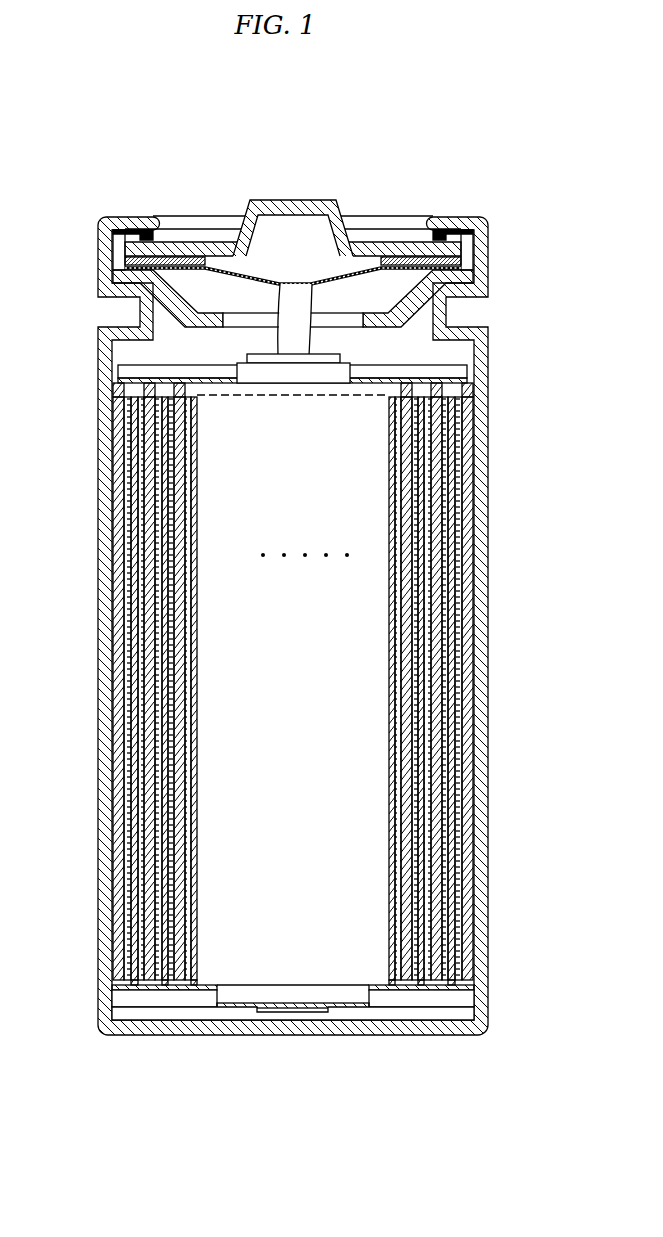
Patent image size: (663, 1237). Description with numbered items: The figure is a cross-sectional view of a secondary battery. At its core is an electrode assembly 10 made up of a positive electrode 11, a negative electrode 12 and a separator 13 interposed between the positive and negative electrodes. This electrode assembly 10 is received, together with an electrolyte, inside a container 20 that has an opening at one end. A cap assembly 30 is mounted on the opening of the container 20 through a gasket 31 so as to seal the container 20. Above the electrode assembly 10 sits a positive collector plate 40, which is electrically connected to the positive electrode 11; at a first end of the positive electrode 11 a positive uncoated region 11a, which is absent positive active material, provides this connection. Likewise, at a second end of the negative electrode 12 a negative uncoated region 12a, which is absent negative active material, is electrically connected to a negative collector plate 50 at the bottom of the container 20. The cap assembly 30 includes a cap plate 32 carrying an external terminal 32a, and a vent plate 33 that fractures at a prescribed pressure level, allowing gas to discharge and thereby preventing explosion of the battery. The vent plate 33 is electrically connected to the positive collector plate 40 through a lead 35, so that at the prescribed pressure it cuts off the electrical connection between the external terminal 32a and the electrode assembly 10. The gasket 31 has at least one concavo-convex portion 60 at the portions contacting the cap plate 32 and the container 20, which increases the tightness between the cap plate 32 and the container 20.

The electrode assembly 10 is at (252, 691).
The positive electrode 11 is at (120, 456).
The positive uncoated region 11a is at (118, 388).
The negative electrode 12 is at (128, 937).
The negative uncoated region 12a is at (121, 988).
The separator 13 is at (157, 608).
The container 20 is at (482, 532).
The cap assembly 30 is at (301, 258).
The gasket 31 is at (113, 257).
The cap plate 32 is at (293, 210).
The external terminal 32a is at (308, 200).
The vent plate 33 is at (178, 259).
The lead 35 is at (312, 296).
The positive collector plate 40 is at (446, 361).
The negative collector plate 50 is at (139, 1011).
The concavo-convex portion 60 is at (146, 238).